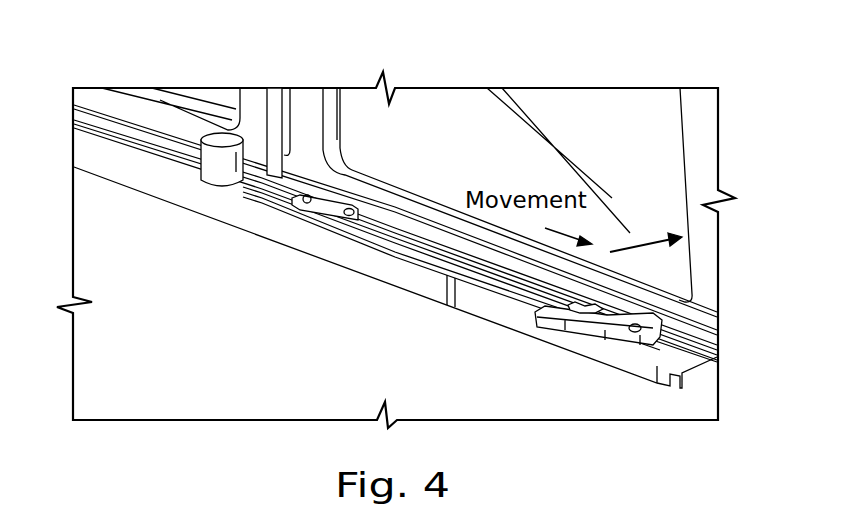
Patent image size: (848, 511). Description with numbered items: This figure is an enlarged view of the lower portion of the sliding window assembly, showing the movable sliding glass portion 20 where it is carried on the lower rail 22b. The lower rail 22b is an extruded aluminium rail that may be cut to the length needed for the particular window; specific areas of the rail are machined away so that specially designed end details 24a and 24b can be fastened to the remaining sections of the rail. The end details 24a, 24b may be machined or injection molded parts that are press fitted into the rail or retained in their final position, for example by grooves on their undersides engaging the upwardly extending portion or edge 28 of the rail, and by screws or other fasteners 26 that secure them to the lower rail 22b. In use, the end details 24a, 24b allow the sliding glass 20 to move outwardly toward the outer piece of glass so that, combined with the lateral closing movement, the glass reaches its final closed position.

The movable sliding glass portion 20 is at (150, 118).
The lower rail 22b is at (148, 175).
The end detail 24a is at (580, 323).
The end detail 24b is at (292, 216).
The fasteners 26 is at (307, 195).
The upwardly extending portion or edge of the rail 28 is at (448, 242).